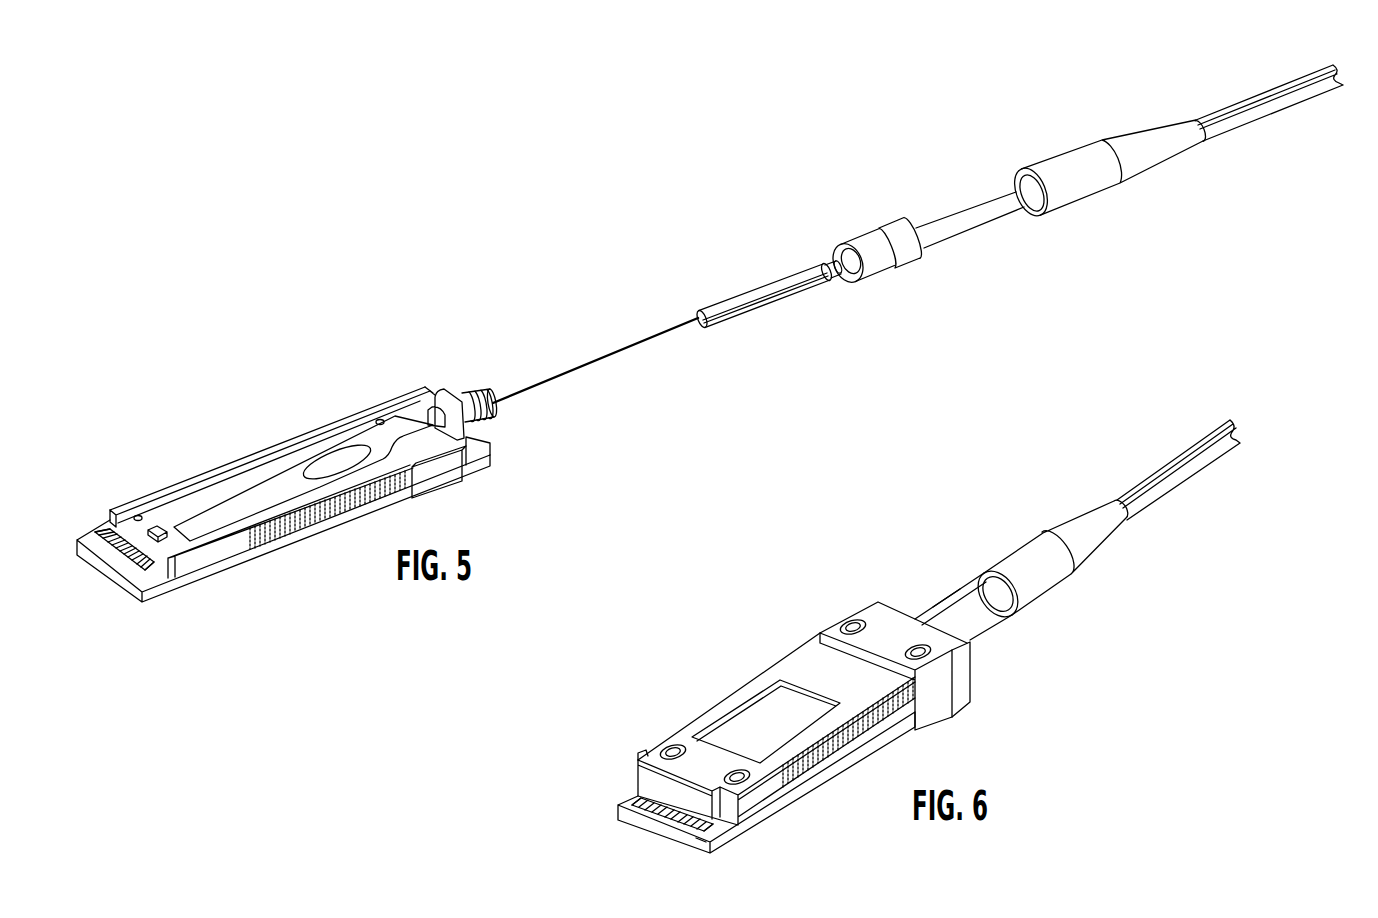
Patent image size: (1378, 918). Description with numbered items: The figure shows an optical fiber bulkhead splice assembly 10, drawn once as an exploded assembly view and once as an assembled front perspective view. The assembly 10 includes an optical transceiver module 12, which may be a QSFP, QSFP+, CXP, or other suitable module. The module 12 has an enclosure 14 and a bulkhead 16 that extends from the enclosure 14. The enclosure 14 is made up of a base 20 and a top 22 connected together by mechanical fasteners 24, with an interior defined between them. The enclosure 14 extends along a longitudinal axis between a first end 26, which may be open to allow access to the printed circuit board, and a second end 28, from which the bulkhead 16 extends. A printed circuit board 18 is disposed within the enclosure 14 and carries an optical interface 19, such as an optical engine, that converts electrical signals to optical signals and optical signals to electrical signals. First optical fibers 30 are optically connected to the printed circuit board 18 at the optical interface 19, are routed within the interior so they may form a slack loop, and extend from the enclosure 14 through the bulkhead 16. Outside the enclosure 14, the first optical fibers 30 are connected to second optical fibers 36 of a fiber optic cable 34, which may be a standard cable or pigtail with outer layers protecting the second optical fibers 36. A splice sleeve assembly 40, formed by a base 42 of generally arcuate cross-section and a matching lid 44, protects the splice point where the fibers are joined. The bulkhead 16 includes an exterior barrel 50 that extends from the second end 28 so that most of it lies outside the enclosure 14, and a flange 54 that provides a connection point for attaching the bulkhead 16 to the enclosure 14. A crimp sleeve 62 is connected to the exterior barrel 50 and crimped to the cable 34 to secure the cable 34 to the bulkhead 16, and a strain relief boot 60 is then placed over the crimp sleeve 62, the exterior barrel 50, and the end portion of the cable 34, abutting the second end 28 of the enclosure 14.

In FIG. 5, the optical fiber bulkhead splice assembly 10 is at (738, 173).
In FIG. 6, the optical fiber bulkhead splice assembly 10 is at (801, 533).
In FIG. 5, the optical transceiver module 12 is at (437, 347).
In FIG. 6, the optical transceiver module 12 is at (807, 610).
In FIG. 5, the enclosure 14 is at (318, 402).
In FIG. 6, the enclosure 14 is at (713, 698).
In FIG. 5, the bulkhead 16 is at (462, 384).
In FIG. 6, the bulkhead 16 is at (940, 598).
In FIG. 5, the printed circuit board 18 is at (96, 531).
In FIG. 6, the printed circuit board 18 is at (633, 791).
In FIG. 5, the optical interface 19 is at (153, 529).
In FIG. 5, the base 20 is at (235, 547).
In FIG. 6, the base 20 is at (770, 803).
In FIG. 6, the top 22 is at (705, 760).
In FIG. 6, the mechanical fasteners 24 is at (847, 620).
In FIG. 6, the first end 26 is at (696, 840).
In FIG. 6, the second end 28 is at (971, 670).
In FIG. 5, the first optical fibers 30 is at (238, 501).
In FIG. 5, the fiber optic cable 34 is at (1231, 101).
In FIG. 6, the fiber optic cable 34 is at (1150, 466).
In FIG. 5, the second optical fibers 36 is at (847, 279).
In FIG. 5, the splice sleeve assembly 40 is at (742, 323).
In FIG. 5, the base 42 is at (769, 303).
In FIG. 5, the lid 44 is at (745, 290).
In FIG. 5, the exterior barrel 50 is at (493, 424).
In FIG. 6, the exterior barrel 50 is at (974, 616).
In FIG. 5, the flange 54 is at (479, 446).
In FIG. 5, the strain relief boot 60 is at (1089, 139).
In FIG. 6, the strain relief boot 60 is at (1042, 524).
In FIG. 5, the crimp sleeve 62 is at (868, 228).